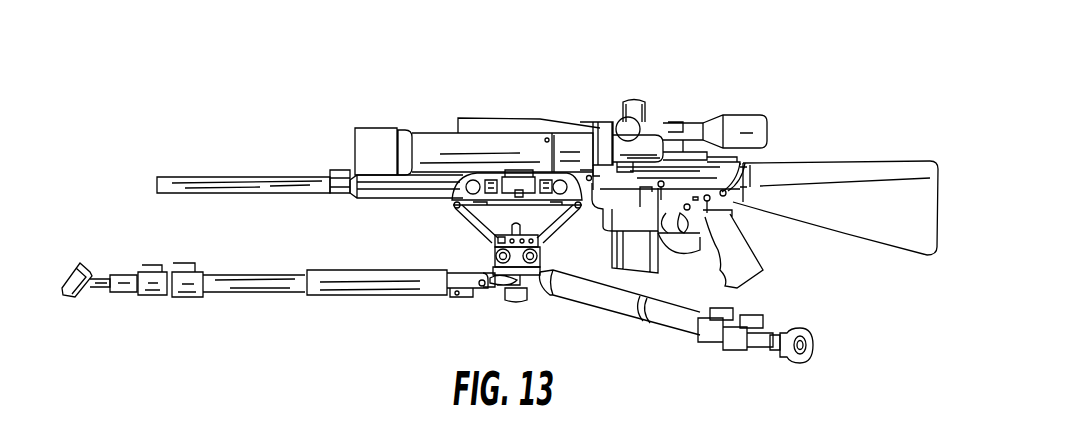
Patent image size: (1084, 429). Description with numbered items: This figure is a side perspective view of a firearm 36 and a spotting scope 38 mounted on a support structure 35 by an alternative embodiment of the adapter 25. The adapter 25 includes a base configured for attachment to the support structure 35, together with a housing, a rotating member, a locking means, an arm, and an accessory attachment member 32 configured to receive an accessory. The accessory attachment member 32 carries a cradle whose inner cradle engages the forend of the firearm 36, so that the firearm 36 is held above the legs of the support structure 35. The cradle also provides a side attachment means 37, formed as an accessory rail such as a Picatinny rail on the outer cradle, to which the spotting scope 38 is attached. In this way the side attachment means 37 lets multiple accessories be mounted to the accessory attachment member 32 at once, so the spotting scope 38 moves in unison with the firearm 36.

The spotting scope 38 is at (428, 137).
The firearm 36 is at (813, 170).
The accessory attachment member 32 is at (452, 203).
The side attachment means 37 is at (483, 234).
The adapter 25 is at (487, 265).
The support structure 35 is at (443, 280).